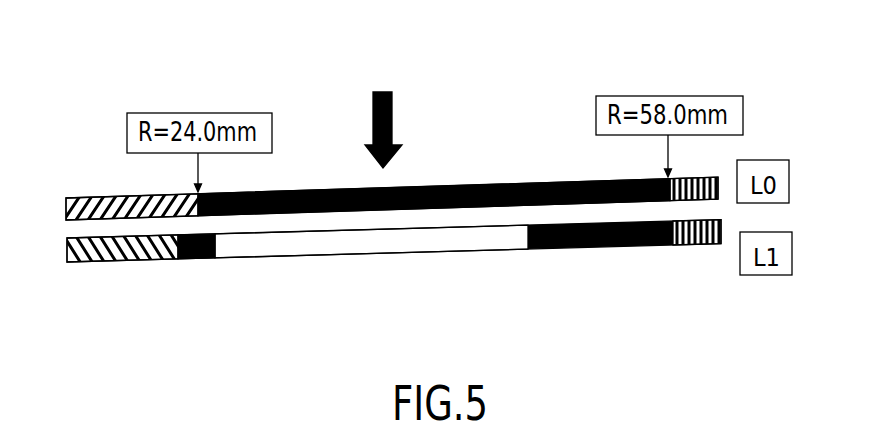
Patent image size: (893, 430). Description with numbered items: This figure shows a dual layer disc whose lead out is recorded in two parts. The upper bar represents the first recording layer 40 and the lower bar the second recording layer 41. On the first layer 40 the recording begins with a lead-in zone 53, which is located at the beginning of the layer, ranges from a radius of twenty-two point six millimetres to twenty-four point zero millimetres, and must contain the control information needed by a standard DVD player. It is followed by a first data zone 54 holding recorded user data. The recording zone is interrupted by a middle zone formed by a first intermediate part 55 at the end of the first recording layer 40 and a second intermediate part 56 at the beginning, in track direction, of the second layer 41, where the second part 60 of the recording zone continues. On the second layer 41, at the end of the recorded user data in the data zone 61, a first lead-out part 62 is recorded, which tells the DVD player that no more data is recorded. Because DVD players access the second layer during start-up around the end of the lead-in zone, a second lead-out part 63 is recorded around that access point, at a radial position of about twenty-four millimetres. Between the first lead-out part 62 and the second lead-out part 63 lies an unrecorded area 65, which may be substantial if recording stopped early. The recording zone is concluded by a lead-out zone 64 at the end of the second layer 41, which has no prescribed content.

The L0 layer 40 is at (66, 208).
The L1 layer 41 is at (67, 250).
The lead-in zone 53 is at (91, 195).
The first data zone 54 is at (317, 190).
The first intermediate part 55 is at (707, 177).
The second intermediate part 56 is at (697, 246).
The second part 60 is at (392, 108).
The data zone 61 is at (612, 246).
The first lead-out part 62 is at (547, 249).
The second lead-out part 63 is at (195, 259).
The lead-out zone 64 is at (93, 262).
The unrecorded area 65 is at (323, 254).